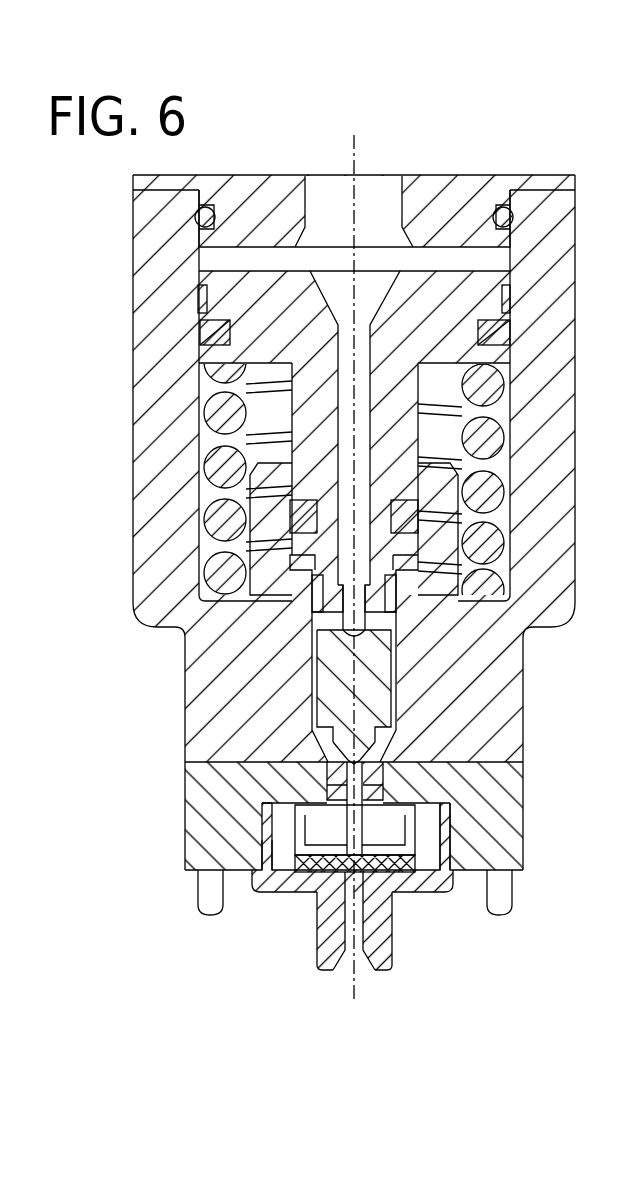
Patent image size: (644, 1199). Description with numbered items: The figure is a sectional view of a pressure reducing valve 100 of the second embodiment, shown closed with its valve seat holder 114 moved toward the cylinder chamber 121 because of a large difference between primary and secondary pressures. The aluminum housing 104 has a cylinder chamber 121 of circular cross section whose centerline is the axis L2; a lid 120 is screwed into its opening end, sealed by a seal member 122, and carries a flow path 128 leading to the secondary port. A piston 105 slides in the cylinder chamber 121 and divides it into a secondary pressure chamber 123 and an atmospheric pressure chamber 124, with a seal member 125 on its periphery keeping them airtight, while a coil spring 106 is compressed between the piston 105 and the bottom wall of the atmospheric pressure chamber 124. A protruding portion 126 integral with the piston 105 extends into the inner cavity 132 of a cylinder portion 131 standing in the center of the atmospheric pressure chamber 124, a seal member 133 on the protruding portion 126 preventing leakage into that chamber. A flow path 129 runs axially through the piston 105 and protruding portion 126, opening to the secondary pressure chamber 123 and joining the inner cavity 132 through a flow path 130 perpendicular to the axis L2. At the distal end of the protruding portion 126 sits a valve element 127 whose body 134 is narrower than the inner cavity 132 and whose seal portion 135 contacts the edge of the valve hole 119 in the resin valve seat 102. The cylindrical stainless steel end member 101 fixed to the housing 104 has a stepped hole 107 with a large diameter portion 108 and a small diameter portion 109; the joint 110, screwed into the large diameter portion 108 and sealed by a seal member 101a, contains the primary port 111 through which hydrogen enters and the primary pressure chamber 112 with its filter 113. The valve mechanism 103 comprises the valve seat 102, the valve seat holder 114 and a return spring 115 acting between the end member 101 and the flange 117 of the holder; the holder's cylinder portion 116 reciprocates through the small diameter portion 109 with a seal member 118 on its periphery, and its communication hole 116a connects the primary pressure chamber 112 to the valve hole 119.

The pressure reducing valve 100 is at (407, 138).
The axis L2 is at (355, 143).
The end member 101 is at (301, 838).
The seal member 101a is at (192, 870).
The valve seat 102 is at (330, 782).
The valve mechanism 103 is at (462, 925).
The housing 104 is at (573, 585).
The piston 105 is at (200, 283).
The coil spring 106 is at (207, 468).
The stepped hole 107 is at (513, 816).
The large diameter portion 108 is at (433, 830).
The small diameter portion 109 is at (457, 790).
The joint 110 is at (302, 892).
The primary port 111 is at (370, 970).
The primary pressure chamber 112 is at (205, 905).
The filter 113 is at (307, 890).
The valve seat holder 114 is at (323, 905).
The return spring 115 is at (268, 862).
The cylinder portion 116 is at (288, 910).
The communication hole 116a is at (410, 893).
The flange 117 is at (293, 890).
The seal member 118 is at (300, 812).
The valve hole 119 is at (394, 742).
The lid 120 is at (133, 183).
The cylinder chamber 121 is at (207, 375).
The seal member 122 is at (193, 218).
The secondary pressure chamber 123 is at (512, 265).
The atmospheric pressure chamber 124 is at (512, 417).
The seal member 125 is at (195, 338).
The protruding portion 126 is at (458, 440).
The valve element 127 is at (225, 674).
The flow path 128 is at (313, 175).
The flow path 129 is at (370, 347).
The flow path 130 is at (397, 625).
The cylinder portion 131 is at (447, 542).
The inner cavity 132 is at (330, 632).
The seal member 133 is at (262, 590).
The body 134 is at (330, 695).
The seal portion 135 is at (337, 757).